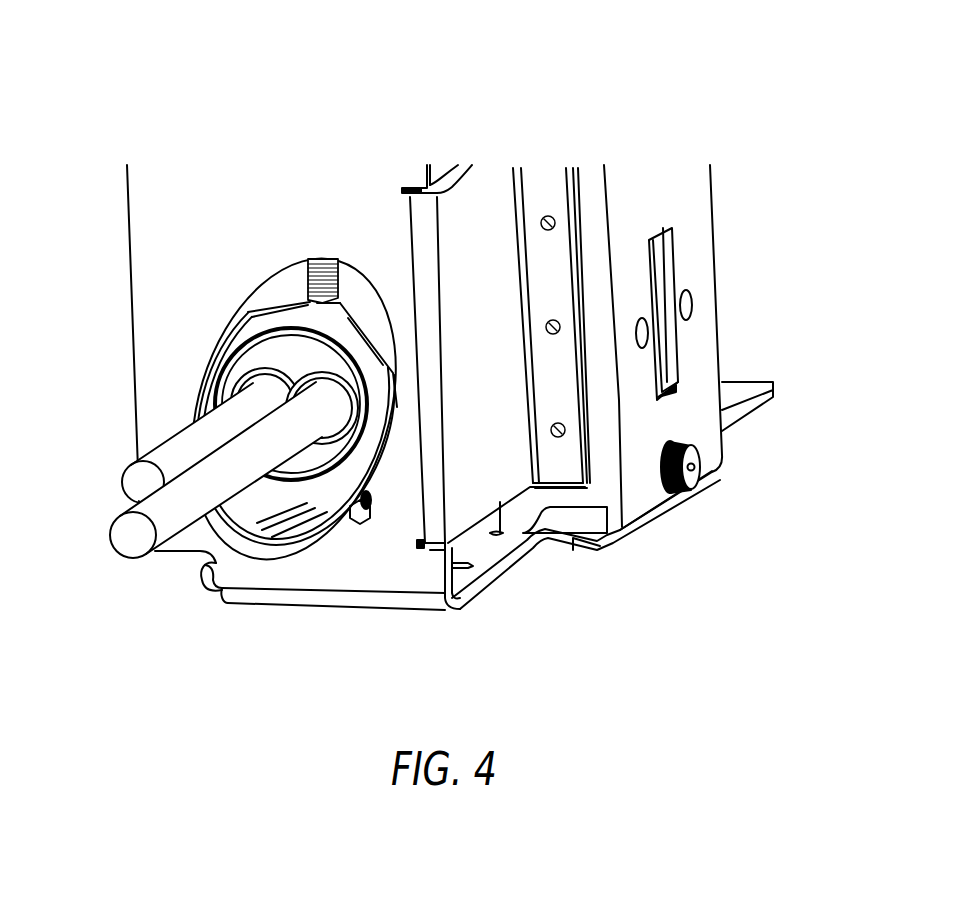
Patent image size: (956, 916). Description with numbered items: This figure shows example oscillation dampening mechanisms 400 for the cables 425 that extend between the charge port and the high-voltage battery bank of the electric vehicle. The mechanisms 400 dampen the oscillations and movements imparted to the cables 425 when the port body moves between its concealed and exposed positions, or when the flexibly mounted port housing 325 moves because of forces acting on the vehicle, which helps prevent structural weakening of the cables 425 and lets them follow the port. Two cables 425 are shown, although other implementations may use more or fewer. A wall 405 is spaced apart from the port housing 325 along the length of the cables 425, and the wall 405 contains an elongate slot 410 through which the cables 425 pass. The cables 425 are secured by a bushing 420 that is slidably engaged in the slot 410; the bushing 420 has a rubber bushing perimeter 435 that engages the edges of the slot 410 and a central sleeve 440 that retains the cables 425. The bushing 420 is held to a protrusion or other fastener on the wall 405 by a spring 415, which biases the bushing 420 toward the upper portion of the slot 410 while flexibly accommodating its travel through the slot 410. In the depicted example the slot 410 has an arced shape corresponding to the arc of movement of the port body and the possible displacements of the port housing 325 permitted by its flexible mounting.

The oscillation dampening mechanism 400 is at (212, 98).
The wall 405 is at (128, 208).
The elongate slot 410 is at (355, 268).
The spring 415 is at (310, 275).
The bushing 420 is at (207, 344).
The cables 425 is at (193, 440).
The rubber bushing perimeter 435 is at (212, 397).
The central sleeve 440 is at (263, 382).
The port housing 325 is at (700, 345).